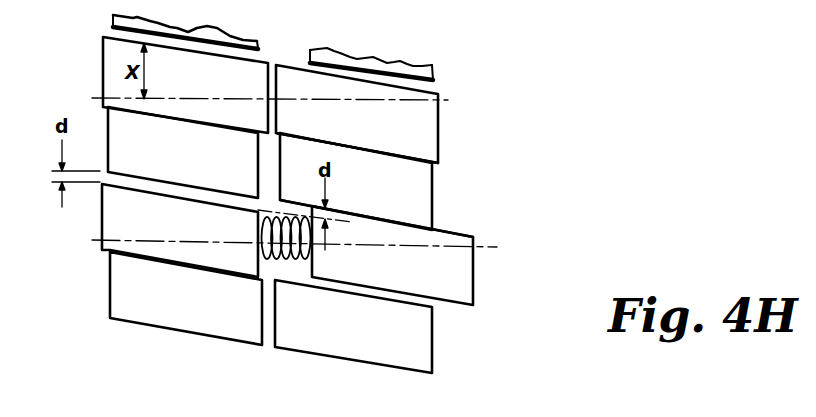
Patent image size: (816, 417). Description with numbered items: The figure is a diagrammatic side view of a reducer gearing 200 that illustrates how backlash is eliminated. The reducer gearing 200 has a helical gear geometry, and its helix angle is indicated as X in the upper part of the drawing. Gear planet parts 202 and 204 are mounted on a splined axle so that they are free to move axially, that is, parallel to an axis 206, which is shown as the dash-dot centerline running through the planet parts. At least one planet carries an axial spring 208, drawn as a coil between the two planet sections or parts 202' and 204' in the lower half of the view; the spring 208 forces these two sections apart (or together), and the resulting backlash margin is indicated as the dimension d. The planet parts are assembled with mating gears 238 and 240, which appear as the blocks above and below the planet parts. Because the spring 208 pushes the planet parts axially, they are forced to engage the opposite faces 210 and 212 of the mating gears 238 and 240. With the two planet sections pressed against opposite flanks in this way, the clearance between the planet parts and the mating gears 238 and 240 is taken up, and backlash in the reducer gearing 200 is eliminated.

The reducer gearing 200 is at (405, 68).
The gear planet part 202 is at (149, 72).
The planet section 202' is at (145, 238).
The gear planet part 204 is at (397, 114).
The planet section 204' is at (432, 253).
The axis 206 is at (248, 93).
The axial spring 208 is at (258, 280).
The face of mating gear 210 is at (380, 218).
The face of mating gear 212 is at (387, 150).
The mating gear 238 is at (403, 160).
The mating gear 240 is at (118, 133).